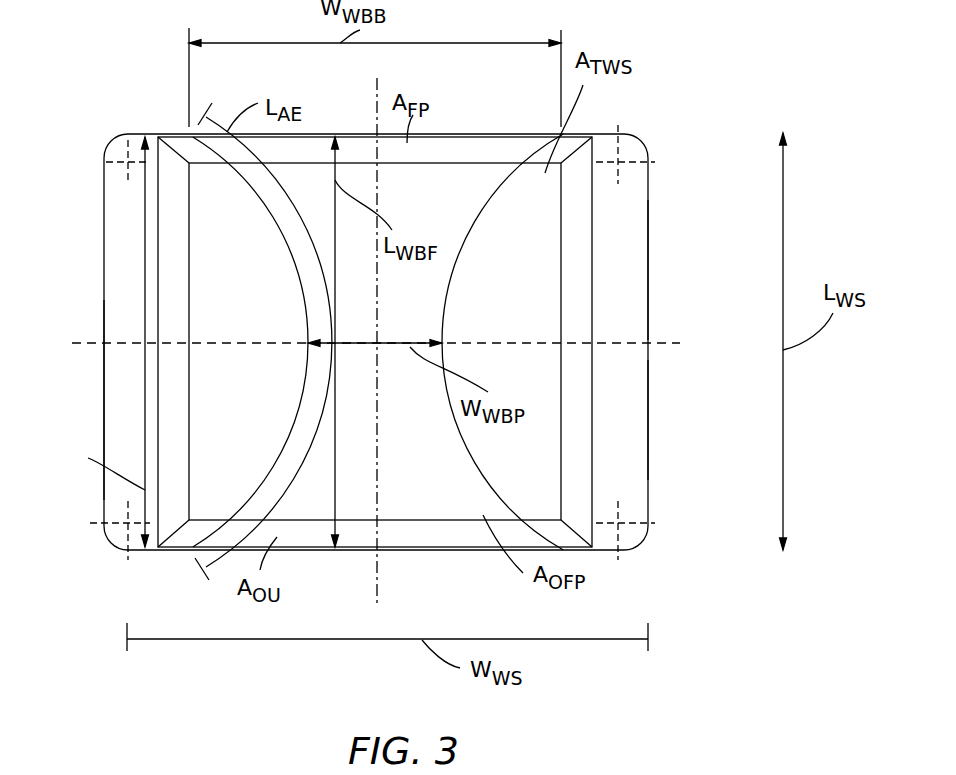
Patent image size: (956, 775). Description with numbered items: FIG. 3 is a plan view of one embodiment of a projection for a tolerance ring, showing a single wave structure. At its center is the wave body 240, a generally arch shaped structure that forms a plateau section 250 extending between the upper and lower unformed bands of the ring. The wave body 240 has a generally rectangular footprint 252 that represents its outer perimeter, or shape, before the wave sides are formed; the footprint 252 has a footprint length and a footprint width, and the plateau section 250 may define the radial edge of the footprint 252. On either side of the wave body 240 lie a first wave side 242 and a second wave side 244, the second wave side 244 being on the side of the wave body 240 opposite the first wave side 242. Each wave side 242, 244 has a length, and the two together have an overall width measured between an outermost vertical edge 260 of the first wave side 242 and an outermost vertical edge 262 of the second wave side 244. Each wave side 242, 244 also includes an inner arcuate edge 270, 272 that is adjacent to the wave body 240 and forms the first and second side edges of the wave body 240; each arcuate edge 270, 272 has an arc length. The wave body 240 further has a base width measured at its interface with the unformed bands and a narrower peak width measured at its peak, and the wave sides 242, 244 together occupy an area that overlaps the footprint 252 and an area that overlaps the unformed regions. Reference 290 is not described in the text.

The wave body 240 is at (632, 538).
The first wave side 242 is at (120, 223).
The second wave side 244 is at (632, 305).
The plateau section 250 is at (376, 347).
The footprint 252 is at (594, 163).
The outermost vertical edge of the first wave side 260 is at (110, 333).
The outermost vertical edge of the second wave side 262 is at (637, 397).
The inner arcuate edge 270 is at (277, 220).
The inner arcuate edge 272 is at (476, 217).
The frame inner portion 290 is at (482, 173).